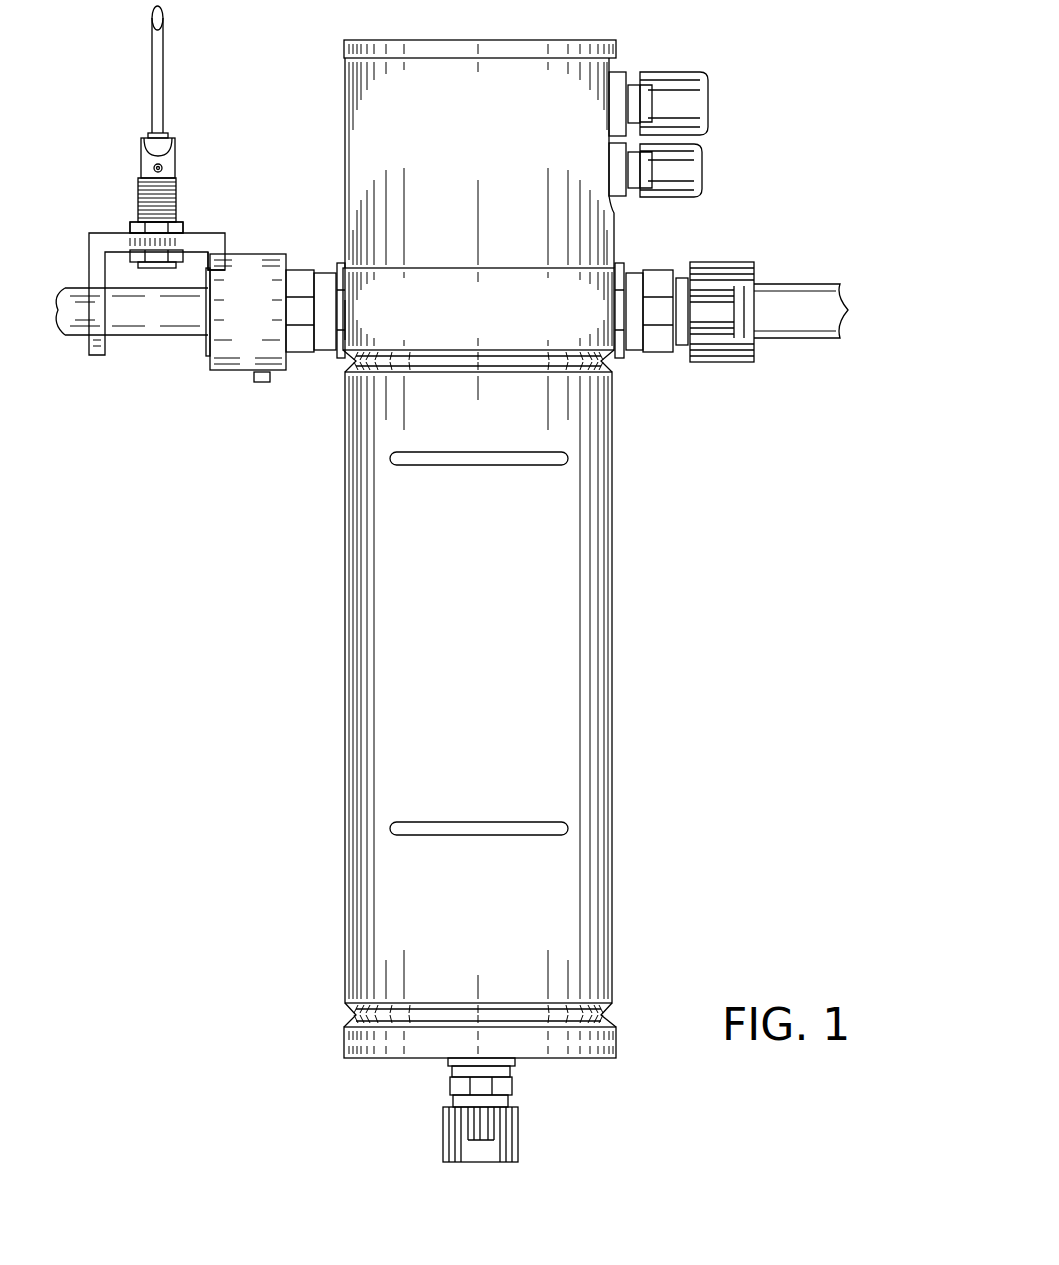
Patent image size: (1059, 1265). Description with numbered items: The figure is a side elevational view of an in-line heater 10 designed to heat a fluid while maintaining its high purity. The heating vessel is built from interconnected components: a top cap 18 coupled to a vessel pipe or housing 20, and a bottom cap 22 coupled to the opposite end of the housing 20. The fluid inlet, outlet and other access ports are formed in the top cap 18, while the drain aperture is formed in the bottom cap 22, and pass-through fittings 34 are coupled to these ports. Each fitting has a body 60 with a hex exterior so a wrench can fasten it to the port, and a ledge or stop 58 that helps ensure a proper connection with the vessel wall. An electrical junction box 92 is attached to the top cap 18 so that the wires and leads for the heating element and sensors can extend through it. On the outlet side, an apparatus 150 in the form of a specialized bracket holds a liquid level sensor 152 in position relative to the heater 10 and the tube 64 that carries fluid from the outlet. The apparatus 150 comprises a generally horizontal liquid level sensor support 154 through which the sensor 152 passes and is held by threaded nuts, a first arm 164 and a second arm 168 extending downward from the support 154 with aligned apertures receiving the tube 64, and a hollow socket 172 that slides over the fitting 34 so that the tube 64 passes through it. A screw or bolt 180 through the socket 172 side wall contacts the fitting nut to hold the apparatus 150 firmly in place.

The in-line heater 10 is at (649, 470).
The top cap 18 is at (373, 308).
The vessel pipe or housing 20 is at (344, 653).
The bottom cap 22 is at (344, 1045).
The pass-through fitting 34 is at (672, 72).
The ledge or stop 58 is at (622, 265).
The body 60 is at (658, 352).
The tube 64 is at (790, 285).
The electrical junction box 92 is at (344, 88).
The apparatus 150 is at (72, 246).
The liquid level sensor 152 is at (193, 128).
The liquid level sensor support 154 is at (105, 232).
The first arm 164 is at (88, 270).
The second arm 168 is at (218, 248).
The socket 172 is at (252, 262).
The screw or bolt 180 is at (262, 384).